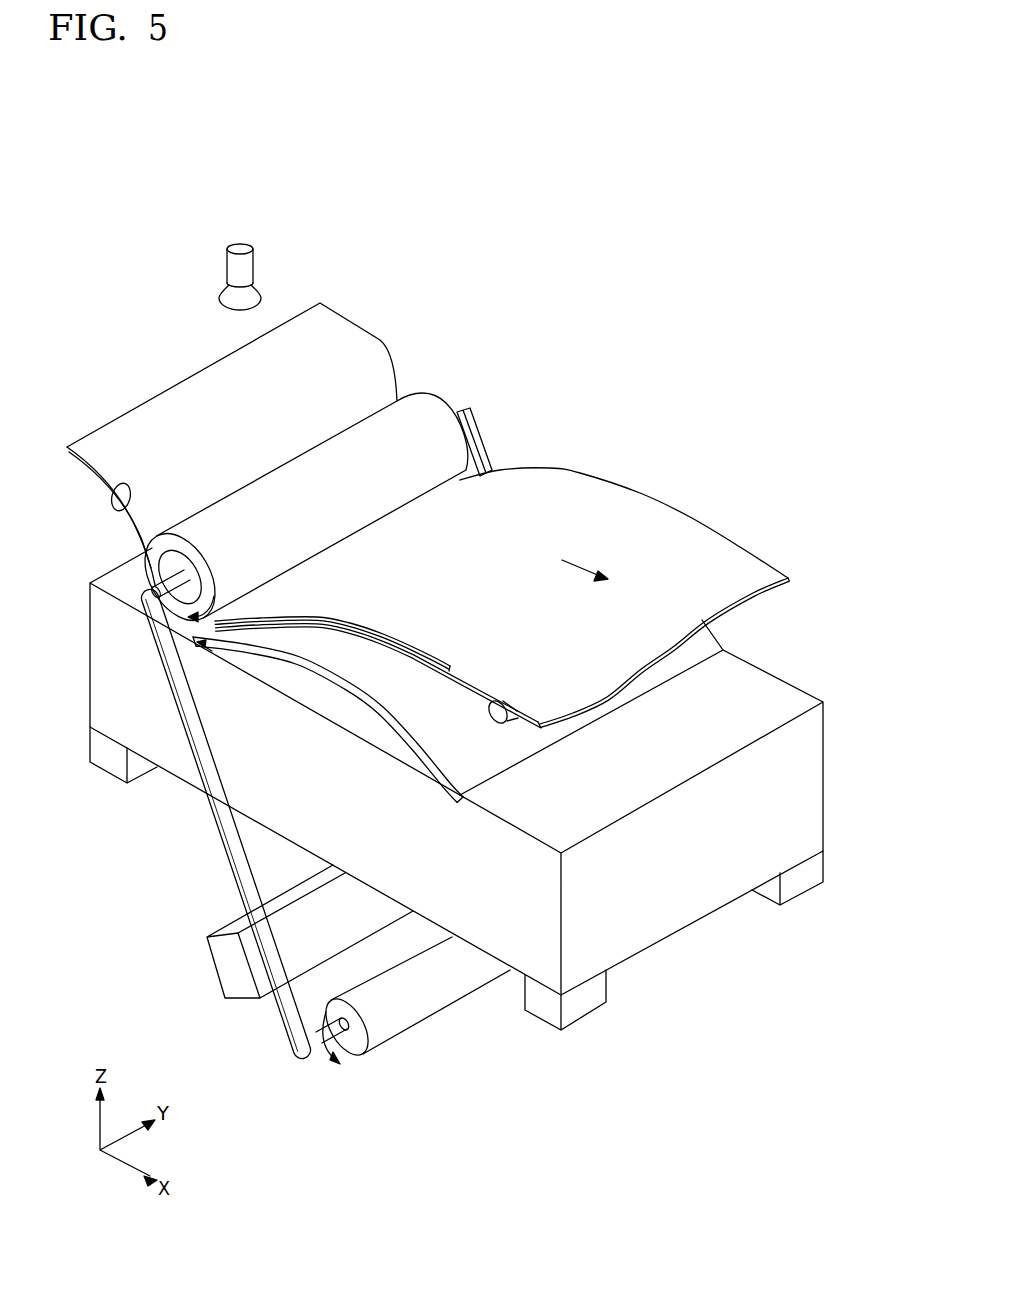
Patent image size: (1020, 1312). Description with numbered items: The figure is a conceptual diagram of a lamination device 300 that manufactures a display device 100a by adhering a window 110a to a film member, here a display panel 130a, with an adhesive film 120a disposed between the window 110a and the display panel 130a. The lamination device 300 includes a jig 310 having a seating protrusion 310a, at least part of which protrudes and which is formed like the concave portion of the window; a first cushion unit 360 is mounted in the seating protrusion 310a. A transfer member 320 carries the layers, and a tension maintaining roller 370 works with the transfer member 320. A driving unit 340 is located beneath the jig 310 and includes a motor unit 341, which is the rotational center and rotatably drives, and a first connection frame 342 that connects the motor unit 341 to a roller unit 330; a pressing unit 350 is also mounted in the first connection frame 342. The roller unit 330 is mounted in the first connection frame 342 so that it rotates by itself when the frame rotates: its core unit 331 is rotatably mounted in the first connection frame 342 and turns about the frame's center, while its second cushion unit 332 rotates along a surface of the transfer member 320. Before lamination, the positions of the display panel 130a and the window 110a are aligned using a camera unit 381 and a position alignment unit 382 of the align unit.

The lamination device 300 is at (672, 346).
The jig 310 is at (632, 927).
The seating protrusion 310a is at (413, 753).
The transfer member 320 is at (752, 572).
The roller unit 330 is at (247, 468).
The core unit 331 is at (168, 557).
The second cushion unit 332 is at (140, 538).
The driving unit 340 is at (325, 884).
The motor unit 341 is at (390, 1032).
The first connection frame 342 is at (305, 1047).
The pressing unit 350 is at (235, 967).
The first cushion unit 360 is at (429, 768).
The tension maintaining roller 370 is at (507, 705).
The camera unit 381 is at (240, 250).
The position alignment unit 382 is at (587, 1002).
The display device 100a is at (369, 625).
The window 110a is at (378, 658).
The adhesive film 120a is at (393, 707).
The display panel 130a is at (358, 628).